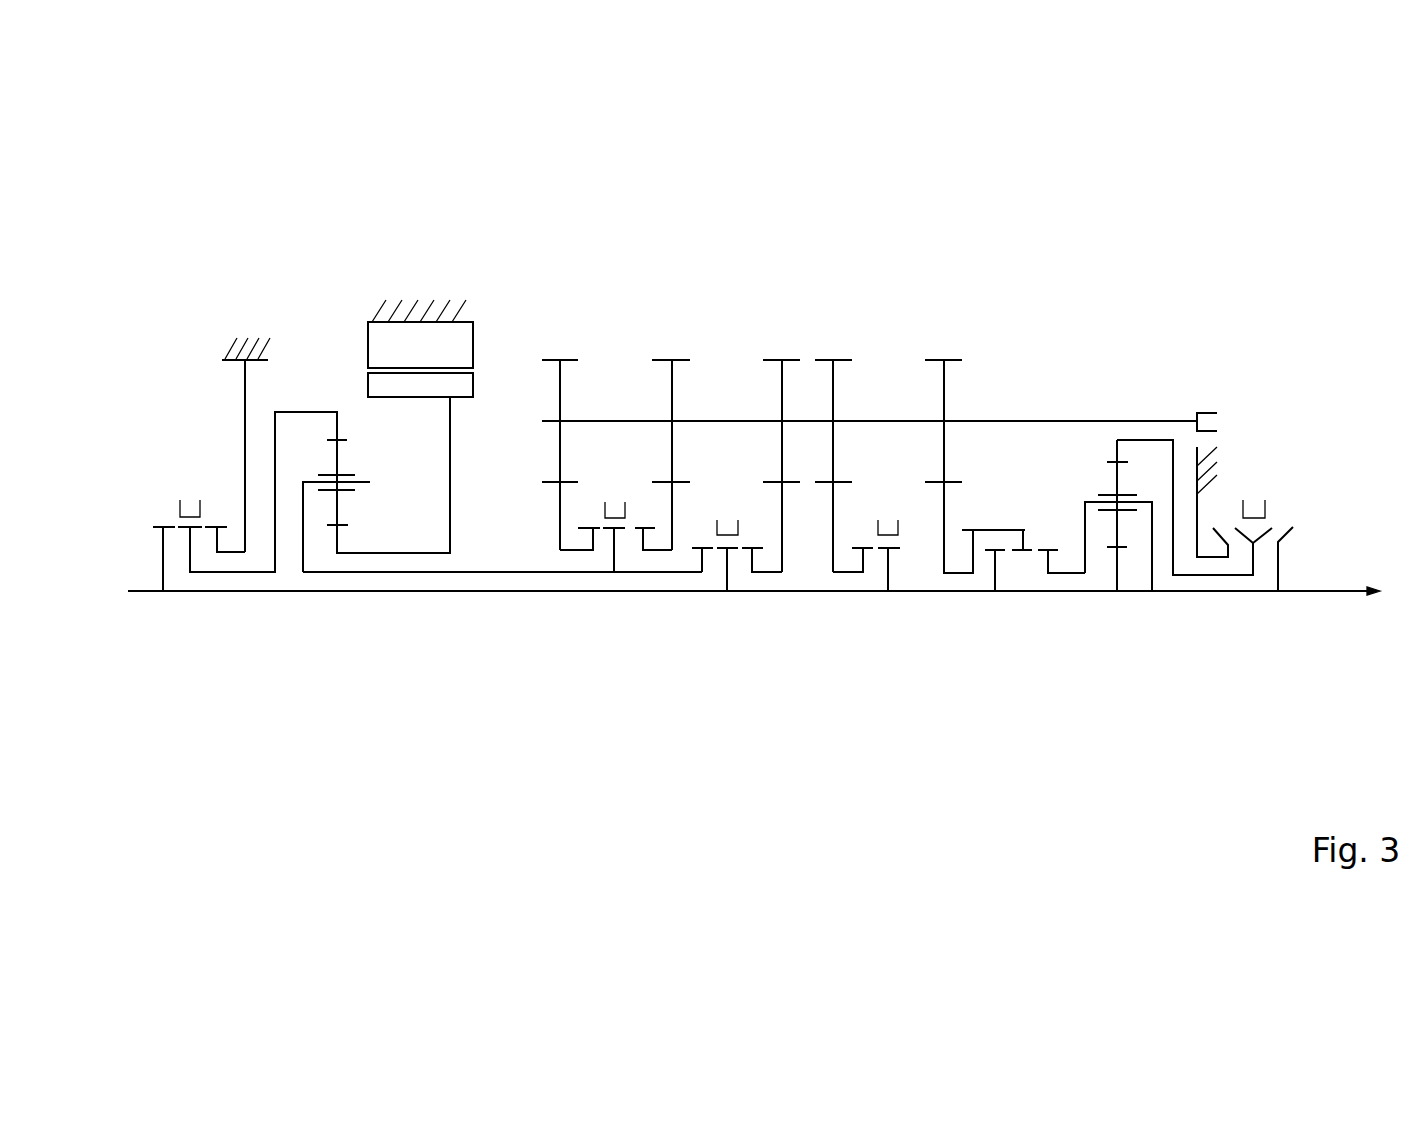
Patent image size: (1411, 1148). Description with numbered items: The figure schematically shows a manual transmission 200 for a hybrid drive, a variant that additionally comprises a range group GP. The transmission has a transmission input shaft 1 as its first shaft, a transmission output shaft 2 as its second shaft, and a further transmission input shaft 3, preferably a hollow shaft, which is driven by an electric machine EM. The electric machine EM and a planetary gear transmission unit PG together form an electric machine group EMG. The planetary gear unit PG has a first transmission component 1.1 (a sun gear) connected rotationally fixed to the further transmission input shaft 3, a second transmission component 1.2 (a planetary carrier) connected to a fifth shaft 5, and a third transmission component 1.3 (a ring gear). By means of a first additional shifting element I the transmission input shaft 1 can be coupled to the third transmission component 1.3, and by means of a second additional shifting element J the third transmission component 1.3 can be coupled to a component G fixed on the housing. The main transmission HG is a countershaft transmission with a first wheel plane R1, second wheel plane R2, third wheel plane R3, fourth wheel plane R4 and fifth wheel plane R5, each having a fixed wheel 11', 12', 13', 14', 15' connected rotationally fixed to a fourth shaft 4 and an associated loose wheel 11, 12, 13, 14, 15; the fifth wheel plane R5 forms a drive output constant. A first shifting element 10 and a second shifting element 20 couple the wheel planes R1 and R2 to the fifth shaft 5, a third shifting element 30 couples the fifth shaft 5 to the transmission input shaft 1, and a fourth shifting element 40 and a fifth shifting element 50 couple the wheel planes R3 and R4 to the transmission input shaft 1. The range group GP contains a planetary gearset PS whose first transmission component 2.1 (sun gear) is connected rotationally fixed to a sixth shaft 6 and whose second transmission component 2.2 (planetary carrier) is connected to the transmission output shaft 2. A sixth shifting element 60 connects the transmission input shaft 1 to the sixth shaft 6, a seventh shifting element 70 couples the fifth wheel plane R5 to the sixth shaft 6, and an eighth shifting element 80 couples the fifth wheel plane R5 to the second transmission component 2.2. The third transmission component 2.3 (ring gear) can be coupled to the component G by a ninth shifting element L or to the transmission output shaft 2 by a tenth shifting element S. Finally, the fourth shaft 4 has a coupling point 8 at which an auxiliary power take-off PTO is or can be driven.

The transmission input shaft 1 is at (152, 593).
The transmission output shaft 2 is at (1333, 597).
The further transmission input shaft 3 is at (405, 553).
The fourth shaft 4 is at (617, 415).
The fifth shaft 5 is at (580, 577).
The sixth shaft 6 is at (1022, 593).
The coupling point 8 is at (1208, 407).
The manual transmission 200 is at (178, 235).
The component fixed on the housing G is at (247, 335).
The first transmission component 1.1 is at (337, 533).
The second transmission component 1.2 is at (313, 493).
The third transmission component 1.3 is at (337, 427).
The electric machine EM is at (397, 282).
The planetary gear transmission unit PG is at (337, 382).
The first additional shifting element I is at (162, 513).
The second additional shifting element J is at (225, 524).
The first shifting element 10 is at (580, 523).
The second shifting element 20 is at (653, 523).
The third shifting element 30 is at (701, 542).
The fourth shifting element 40 is at (762, 542).
The fifth shifting element 50 is at (853, 542).
The sixth shifting element 60 is at (902, 552).
The seventh shifting element 70 is at (994, 543).
The eighth shifting element 80 is at (1061, 534).
The loose wheel 11 is at (555, 544).
The loose wheel 12 is at (676, 544).
The loose wheel 13 is at (770, 544).
The loose wheel 14 is at (829, 544).
The loose wheel 15 is at (978, 544).
The fixed wheel 11' is at (548, 255).
The fixed wheel 12' is at (703, 256).
The fixed wheel 13' is at (793, 256).
The fixed wheel 14' is at (853, 256).
The fixed wheel 15' is at (976, 255).
The first wheel plane R1 is at (560, 342).
The second wheel plane R2 is at (672, 342).
The third wheel plane R3 is at (782, 342).
The fourth wheel plane R4 is at (833, 342).
The fifth wheel plane R5 is at (944, 342).
The first transmission component 2.1 is at (1120, 567).
The second transmission component 2.2 is at (1097, 507).
The third transmission component 2.3 is at (1113, 447).
The planetary gearset PS is at (1118, 395).
The ninth shifting element L is at (1212, 502).
The tenth shifting element S is at (1285, 544).
The auxiliary power take-off PTO is at (1251, 423).
The electric machine group EMG is at (228, 641).
The main transmission HG is at (540, 641).
The range group GP is at (1100, 641).